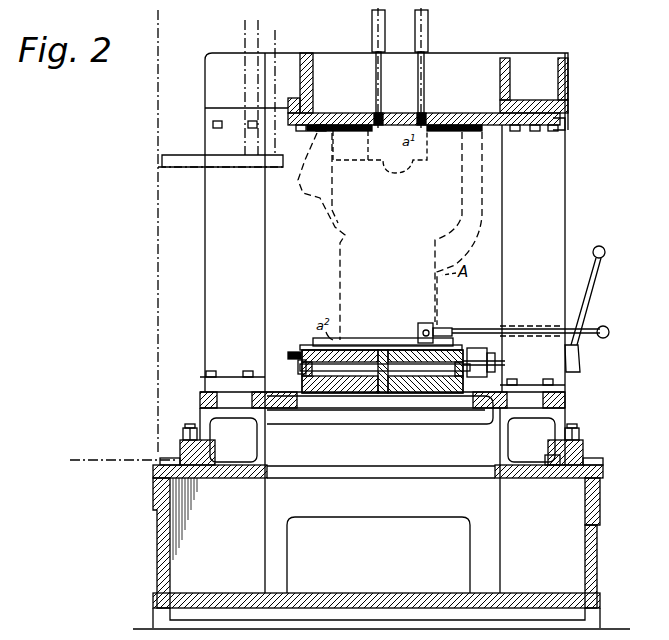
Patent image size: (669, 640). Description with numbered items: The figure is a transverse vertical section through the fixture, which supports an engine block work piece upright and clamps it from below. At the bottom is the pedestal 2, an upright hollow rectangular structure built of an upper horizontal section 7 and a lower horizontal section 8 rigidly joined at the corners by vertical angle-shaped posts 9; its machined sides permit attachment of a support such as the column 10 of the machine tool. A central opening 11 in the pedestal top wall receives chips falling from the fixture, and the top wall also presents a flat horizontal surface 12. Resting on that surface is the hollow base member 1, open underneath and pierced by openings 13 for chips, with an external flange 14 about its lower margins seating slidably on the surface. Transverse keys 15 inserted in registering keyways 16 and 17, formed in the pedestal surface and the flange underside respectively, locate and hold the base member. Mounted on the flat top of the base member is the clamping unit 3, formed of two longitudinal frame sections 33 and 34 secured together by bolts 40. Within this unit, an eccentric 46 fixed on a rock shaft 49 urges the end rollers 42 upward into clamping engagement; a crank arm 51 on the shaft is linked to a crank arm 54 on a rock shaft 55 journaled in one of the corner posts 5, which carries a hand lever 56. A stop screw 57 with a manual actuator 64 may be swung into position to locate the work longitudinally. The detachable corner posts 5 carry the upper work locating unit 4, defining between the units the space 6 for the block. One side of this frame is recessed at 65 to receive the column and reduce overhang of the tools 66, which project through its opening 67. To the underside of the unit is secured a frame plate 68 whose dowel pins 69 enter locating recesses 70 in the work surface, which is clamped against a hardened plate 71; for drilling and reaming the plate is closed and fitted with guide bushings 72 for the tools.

The base member 1 is at (573, 407).
The pedestal 2 is at (150, 573).
The clamping unit 3 is at (302, 344).
The work locating unit 4 is at (577, 91).
The corner posts 5 is at (202, 308).
The space 6 is at (493, 250).
The upper horizontal section 7 is at (601, 500).
The lower horizontal section 8 is at (600, 612).
The vertical angle-shaped posts 9 is at (598, 565).
The column 10 is at (158, 287).
The central opening 11 is at (458, 478).
The flat horizontal surface 12 is at (468, 457).
The openings 13 is at (432, 424).
The external flange 14 is at (186, 440).
The transverse keys 15 is at (207, 462).
The keyway 16 is at (163, 460).
The keyway 17 is at (552, 472).
The longitudinal frame section 33 is at (298, 410).
The longitudinal frame section 34 is at (472, 410).
The bolts 40 is at (364, 364).
The end rollers 42 is at (352, 345).
The eccentric 46 is at (398, 345).
The rock shaft 49 is at (298, 366).
The crank arm 51 is at (475, 348).
The crank arm 54 is at (495, 365).
The rock shaft 55 is at (565, 358).
The hand lever 56 is at (596, 290).
The stop screw 57 is at (425, 323).
The manual actuator 64 is at (598, 328).
The recess 65 is at (275, 70).
The tools 66 is at (420, 88).
The opening 67 is at (488, 66).
The frame plate 68 is at (566, 122).
The dowel pins 69 is at (380, 152).
The locating recesses 70 is at (390, 236).
The hardened plate 71 is at (318, 130).
The guide bushings 72 is at (428, 116).